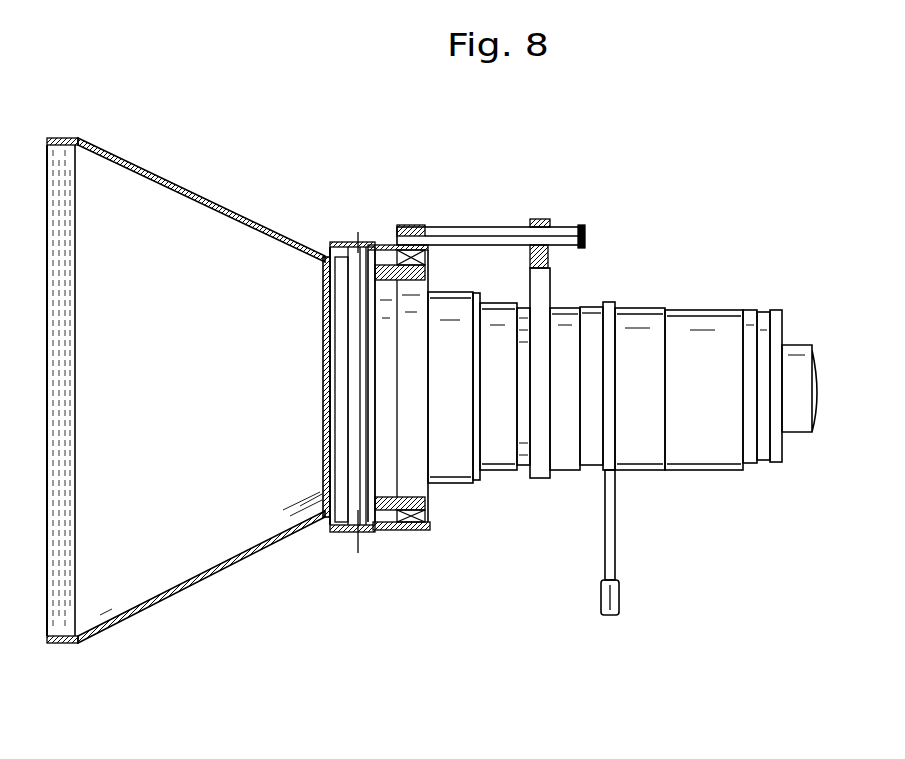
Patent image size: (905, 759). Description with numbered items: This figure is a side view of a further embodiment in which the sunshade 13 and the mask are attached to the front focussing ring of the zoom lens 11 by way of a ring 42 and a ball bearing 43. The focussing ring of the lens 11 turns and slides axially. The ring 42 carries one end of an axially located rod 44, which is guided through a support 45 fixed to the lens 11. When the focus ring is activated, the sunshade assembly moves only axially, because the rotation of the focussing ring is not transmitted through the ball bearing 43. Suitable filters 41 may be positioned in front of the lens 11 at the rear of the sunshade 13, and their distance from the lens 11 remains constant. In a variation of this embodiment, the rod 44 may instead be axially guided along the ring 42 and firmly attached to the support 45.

The lens 11 is at (636, 304).
The sunshade 13 is at (200, 200).
The filters 41 is at (342, 242).
The ring 42 is at (373, 540).
The ball bearing 43 is at (430, 518).
The rod 44 is at (447, 225).
The support 45 is at (530, 278).